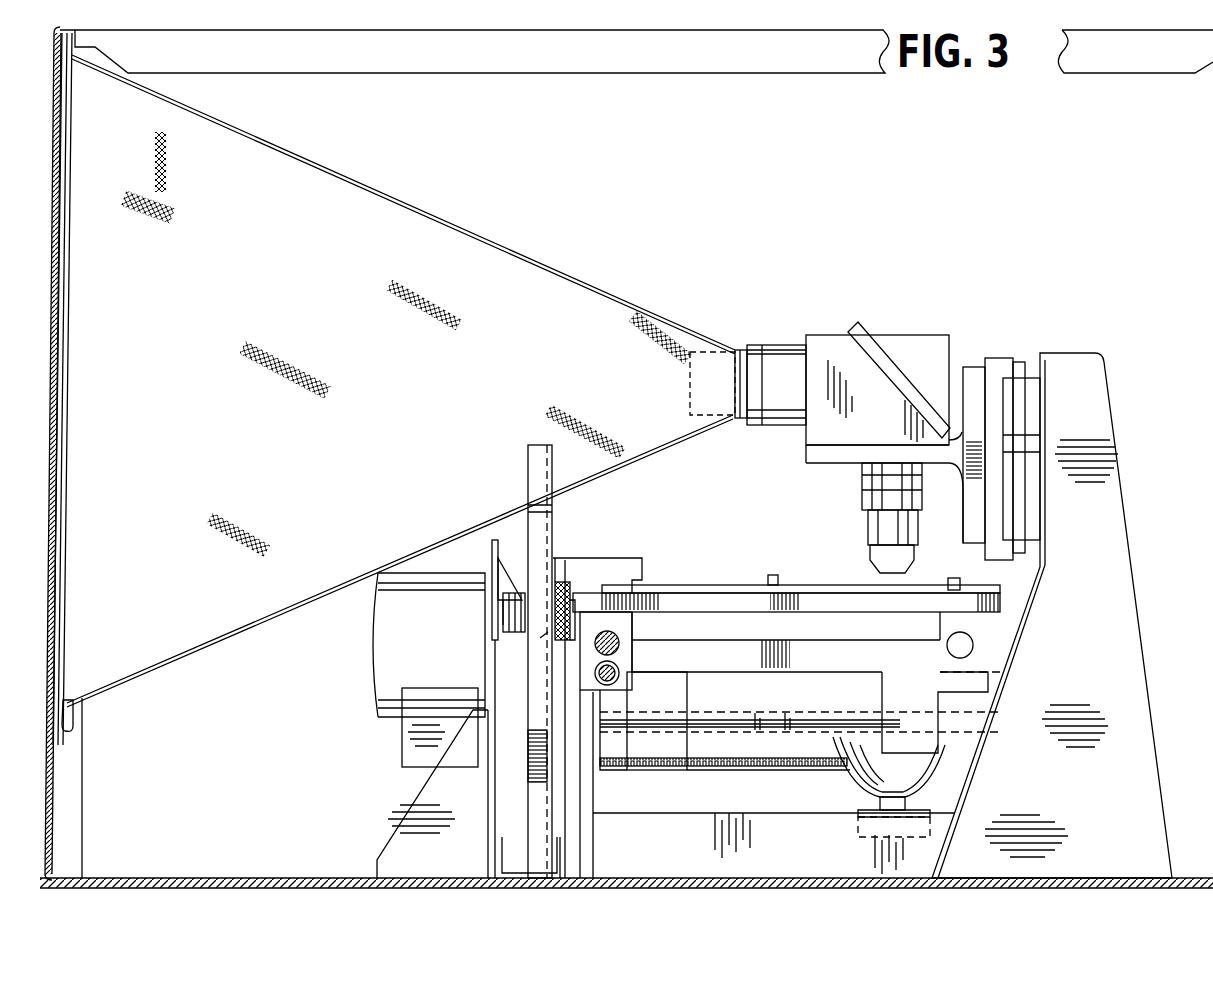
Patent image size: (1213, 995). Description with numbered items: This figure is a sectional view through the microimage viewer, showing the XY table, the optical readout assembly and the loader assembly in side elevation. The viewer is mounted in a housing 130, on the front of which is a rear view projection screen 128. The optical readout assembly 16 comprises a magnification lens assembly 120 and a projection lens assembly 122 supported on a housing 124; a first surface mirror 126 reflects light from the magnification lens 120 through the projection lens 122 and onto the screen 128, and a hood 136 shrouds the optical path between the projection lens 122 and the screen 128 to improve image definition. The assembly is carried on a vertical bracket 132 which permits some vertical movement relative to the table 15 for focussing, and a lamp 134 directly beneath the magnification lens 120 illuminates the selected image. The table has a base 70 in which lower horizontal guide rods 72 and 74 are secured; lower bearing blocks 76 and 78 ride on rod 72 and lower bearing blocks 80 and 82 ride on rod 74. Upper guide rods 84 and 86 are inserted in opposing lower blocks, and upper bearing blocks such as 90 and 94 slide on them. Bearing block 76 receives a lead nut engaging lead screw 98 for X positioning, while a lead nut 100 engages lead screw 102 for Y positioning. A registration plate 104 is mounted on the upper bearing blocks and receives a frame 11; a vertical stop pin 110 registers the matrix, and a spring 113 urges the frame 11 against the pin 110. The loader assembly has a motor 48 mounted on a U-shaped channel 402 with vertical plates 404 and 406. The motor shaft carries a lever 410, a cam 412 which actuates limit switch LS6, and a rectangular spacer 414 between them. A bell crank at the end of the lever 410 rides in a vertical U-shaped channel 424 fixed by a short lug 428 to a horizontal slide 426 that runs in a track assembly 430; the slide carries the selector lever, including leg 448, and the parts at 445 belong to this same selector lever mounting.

The housing 130 is at (365, 78).
The rear view projection screen 128 is at (75, 388).
The hood 136 is at (400, 212).
The projection lens assembly 122 is at (782, 350).
The first surface mirror 126 is at (890, 360).
The housing 124 is at (965, 455).
The magnification lens assembly 120 is at (872, 528).
The optical readout assembly 16 is at (852, 476).
The vertical bracket 132 is at (1120, 625).
The frame 11 is at (685, 585).
The XY table 15 is at (802, 590).
The registration plate 104 is at (1000, 608).
The vertical stop pin 110 is at (773, 575).
The spring 113 is at (955, 578).
The bracket 445 is at (642, 575).
The slide 426 is at (562, 585).
The lug 428 is at (576, 600).
The leg 448 is at (557, 558).
The lead nut 100 is at (582, 670).
The upper guide rod 86 is at (620, 641).
The lead screw 102 is at (620, 680).
The upper bearing block 94 is at (635, 660).
The upper guide rod 84 is at (947, 642).
The upper bearing block 90 is at (990, 680).
The lower bearing block 82 is at (665, 725).
The lower horizontal guide rod 72 is at (772, 725).
The lower horizontal guide rod 74 is at (737, 725).
The lamp 134 is at (812, 766).
The lower bearing block 78 is at (665, 785).
The lead screw 98 is at (718, 780).
The lower bearing block 80 is at (845, 780).
The lower bearing block 76 is at (858, 828).
The base 70 is at (600, 802).
The motor 48 is at (448, 644).
The vertical plate 404 is at (490, 784).
The lever 410 is at (492, 560).
The rectangular spacer 414 is at (492, 575).
The cam 412 is at (503, 593).
The limit switch LS6 is at (505, 612).
The track assembly 430 is at (543, 640).
The vertical U-shaped channel 424 is at (530, 458).
The vertical plate 406 is at (565, 795).
The U-shaped channel 402 is at (505, 848).